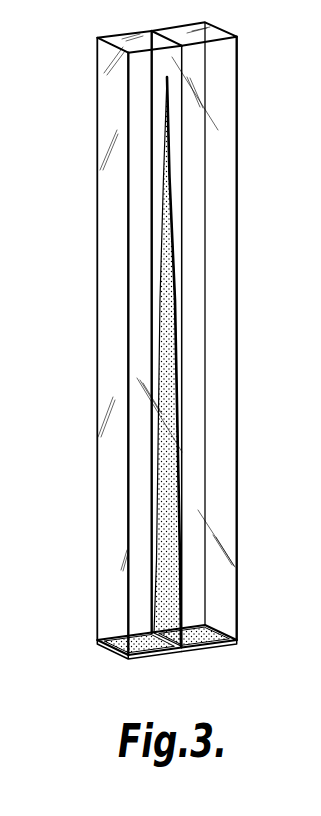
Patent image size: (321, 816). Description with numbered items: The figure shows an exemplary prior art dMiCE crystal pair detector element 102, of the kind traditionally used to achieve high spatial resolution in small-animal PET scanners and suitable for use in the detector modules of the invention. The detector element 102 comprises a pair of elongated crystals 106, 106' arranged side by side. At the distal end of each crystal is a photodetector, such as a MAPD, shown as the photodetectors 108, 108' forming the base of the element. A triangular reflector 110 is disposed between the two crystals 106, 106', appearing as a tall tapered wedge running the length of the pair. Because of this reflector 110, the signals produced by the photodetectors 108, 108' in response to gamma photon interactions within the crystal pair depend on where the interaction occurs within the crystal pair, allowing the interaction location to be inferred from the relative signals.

The dMiCE crystal pair detector element 102 is at (165, 349).
The crystal 106 is at (225, 331).
The crystal 106' is at (99, 343).
The photodetector 108 is at (224, 635).
The photodetector 108' is at (112, 654).
The triangular reflector 110 is at (160, 351).